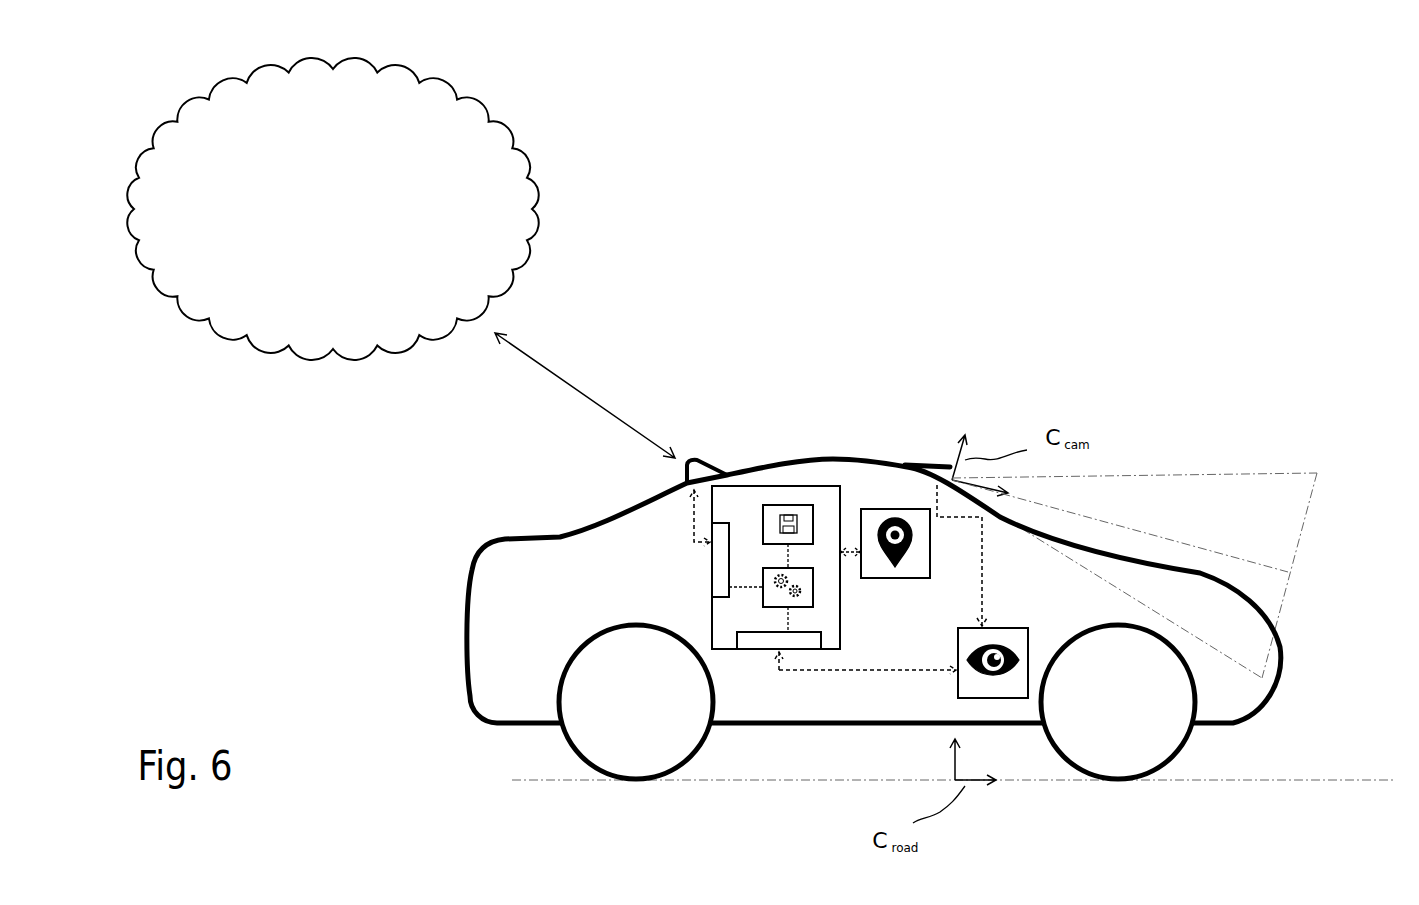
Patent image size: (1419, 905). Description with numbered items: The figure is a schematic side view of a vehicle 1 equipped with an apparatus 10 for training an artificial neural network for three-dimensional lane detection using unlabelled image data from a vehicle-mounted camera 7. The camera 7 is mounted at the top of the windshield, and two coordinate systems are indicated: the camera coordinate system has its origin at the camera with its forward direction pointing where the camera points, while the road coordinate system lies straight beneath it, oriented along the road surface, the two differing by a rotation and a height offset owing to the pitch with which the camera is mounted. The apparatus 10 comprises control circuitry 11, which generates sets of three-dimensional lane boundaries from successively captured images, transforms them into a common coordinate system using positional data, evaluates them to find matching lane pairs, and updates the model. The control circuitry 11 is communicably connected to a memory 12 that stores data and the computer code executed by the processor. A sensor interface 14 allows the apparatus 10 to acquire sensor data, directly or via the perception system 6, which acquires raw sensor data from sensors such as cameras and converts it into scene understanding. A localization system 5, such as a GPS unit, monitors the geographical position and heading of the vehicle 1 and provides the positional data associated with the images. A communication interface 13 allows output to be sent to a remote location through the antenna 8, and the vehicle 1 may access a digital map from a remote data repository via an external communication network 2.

The vehicle 1 is at (488, 718).
The external communication network 2 is at (482, 93).
The localization system 5 is at (878, 509).
The perception system 6 is at (957, 681).
The vehicle-mounted camera 7 is at (930, 463).
The antenna / communication unit 8 is at (703, 458).
The apparatus 10 is at (767, 486).
The control circuitry 11 is at (814, 596).
The memory 12 is at (790, 505).
The communication/antenna interface 13 is at (763, 643).
The sensor interface 14 is at (717, 573).